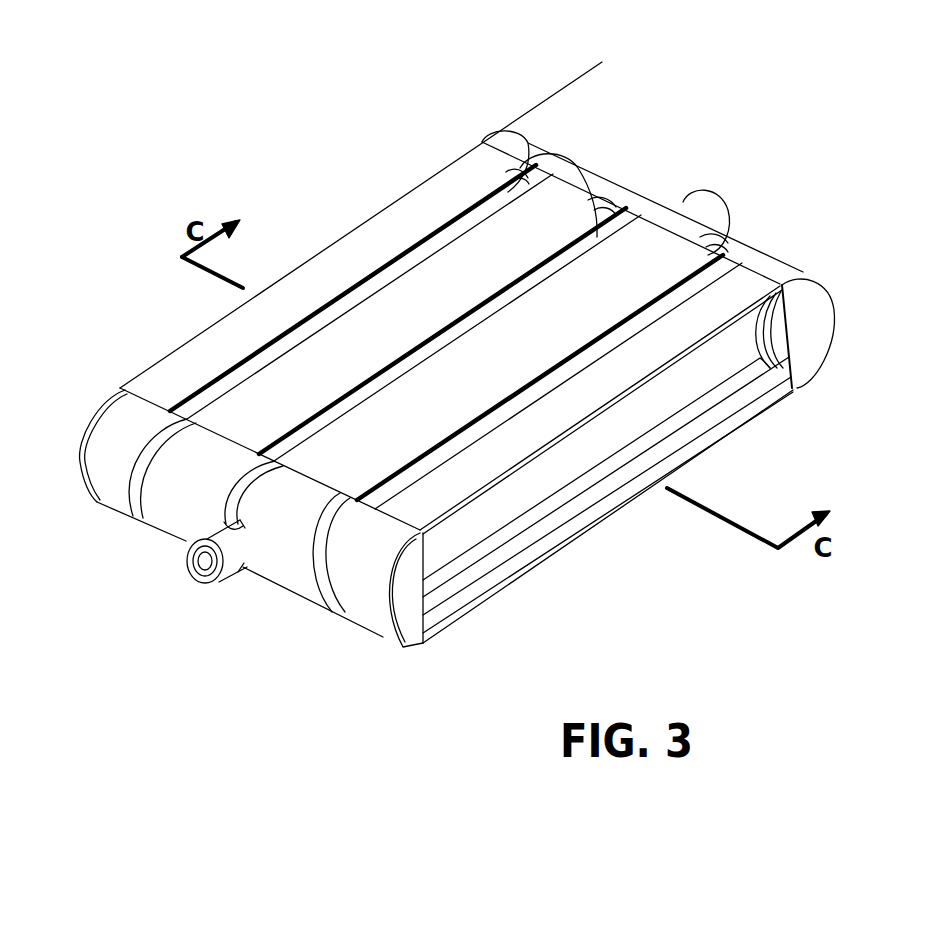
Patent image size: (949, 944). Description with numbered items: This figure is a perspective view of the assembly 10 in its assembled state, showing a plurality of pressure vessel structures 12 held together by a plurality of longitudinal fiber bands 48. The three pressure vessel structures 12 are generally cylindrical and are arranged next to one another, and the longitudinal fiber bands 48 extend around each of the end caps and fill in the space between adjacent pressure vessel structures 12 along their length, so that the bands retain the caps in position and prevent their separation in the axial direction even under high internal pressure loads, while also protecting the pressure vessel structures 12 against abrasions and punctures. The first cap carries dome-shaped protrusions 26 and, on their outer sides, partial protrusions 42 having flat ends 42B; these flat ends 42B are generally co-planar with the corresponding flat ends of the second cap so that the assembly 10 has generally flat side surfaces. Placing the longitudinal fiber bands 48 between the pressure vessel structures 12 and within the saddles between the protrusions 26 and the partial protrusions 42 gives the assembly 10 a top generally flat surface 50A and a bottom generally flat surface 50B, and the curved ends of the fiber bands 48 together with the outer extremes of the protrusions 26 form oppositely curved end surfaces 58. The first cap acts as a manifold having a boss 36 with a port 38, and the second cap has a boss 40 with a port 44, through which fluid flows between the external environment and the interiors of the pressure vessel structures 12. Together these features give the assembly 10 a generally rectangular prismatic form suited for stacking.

The assembly 10 is at (207, 188).
The pressure vessel structure 12 is at (773, 453).
The dome-shaped protrusion 26 is at (147, 420).
The boss 36 is at (240, 567).
The port 38 is at (203, 563).
The boss 40 is at (686, 199).
The partial protrusion 42 is at (82, 452).
The flat end 42B is at (407, 637).
The port 44 is at (735, 225).
The longitudinal fiber band 48 is at (112, 511).
The top generally flat surface 50A is at (338, 278).
The bottom generally flat surface 50B is at (650, 507).
The curved end surface 58 is at (187, 508).